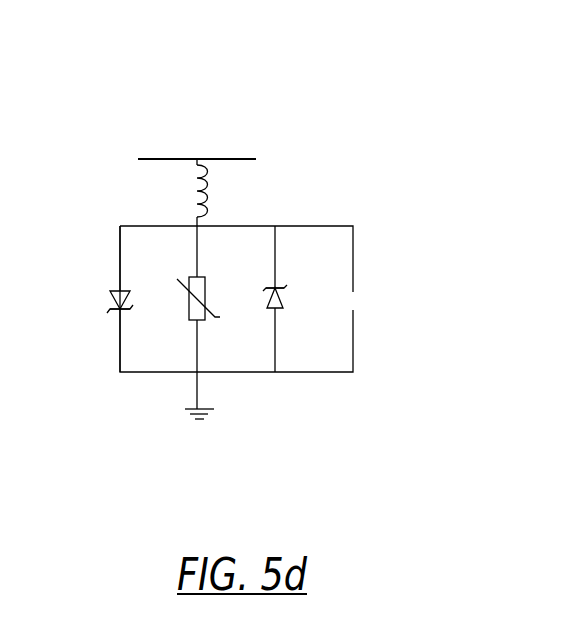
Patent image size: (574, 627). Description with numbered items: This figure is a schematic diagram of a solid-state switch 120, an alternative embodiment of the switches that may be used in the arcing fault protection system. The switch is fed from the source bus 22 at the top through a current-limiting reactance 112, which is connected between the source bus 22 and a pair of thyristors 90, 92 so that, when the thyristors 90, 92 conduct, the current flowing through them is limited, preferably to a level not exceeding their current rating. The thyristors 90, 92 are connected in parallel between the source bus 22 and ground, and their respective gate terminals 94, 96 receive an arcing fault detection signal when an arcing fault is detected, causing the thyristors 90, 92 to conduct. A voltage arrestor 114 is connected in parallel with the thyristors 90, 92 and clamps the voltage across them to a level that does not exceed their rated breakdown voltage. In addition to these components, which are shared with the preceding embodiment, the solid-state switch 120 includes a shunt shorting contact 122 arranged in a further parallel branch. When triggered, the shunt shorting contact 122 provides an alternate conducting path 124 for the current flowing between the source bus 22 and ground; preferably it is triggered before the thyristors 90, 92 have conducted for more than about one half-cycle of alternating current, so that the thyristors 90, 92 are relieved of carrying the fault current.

The source bus 22 is at (181, 158).
The current-limiting reactance 112 is at (199, 181).
The solid-state switch 120 is at (100, 421).
The alternate conducting path 124 is at (369, 223).
The shunt shorting contact 122 is at (362, 289).
The thyristor 90 is at (112, 303).
The gate terminal 94 is at (118, 312).
The voltage arrestor 114 is at (200, 322).
The thyristor 92 is at (280, 310).
The gate terminal 96 is at (283, 289).